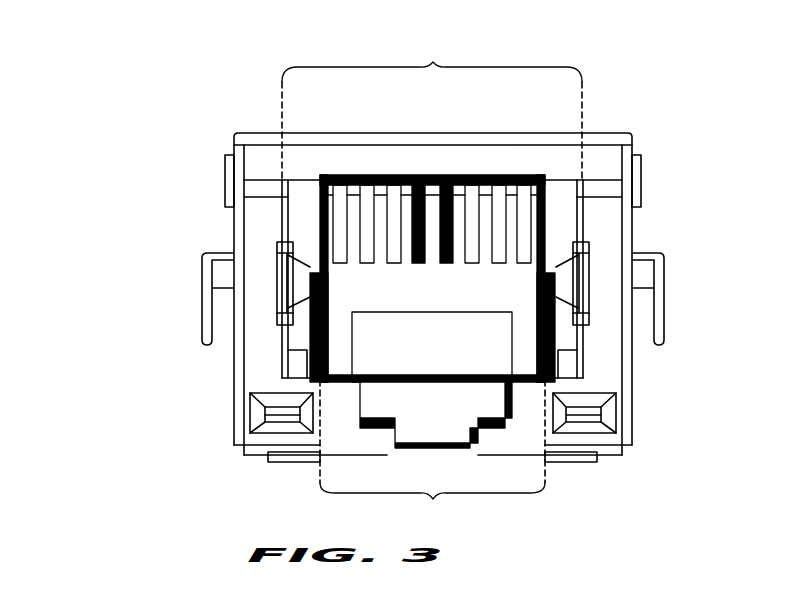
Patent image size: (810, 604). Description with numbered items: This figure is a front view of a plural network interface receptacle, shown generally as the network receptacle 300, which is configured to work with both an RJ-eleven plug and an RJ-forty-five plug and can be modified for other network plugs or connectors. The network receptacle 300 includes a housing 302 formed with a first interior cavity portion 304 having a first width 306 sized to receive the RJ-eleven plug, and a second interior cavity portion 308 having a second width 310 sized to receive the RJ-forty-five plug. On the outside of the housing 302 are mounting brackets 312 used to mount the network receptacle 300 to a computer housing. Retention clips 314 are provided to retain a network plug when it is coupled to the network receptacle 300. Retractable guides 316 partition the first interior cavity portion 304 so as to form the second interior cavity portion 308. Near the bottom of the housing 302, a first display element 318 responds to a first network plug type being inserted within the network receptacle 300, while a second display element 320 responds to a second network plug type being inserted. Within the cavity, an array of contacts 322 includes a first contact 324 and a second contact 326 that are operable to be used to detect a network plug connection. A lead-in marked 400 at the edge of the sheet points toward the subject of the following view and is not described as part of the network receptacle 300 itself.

The network receptacle 300 is at (114, 47).
The housing 302 is at (236, 133).
The first interior cavity portion 304 is at (318, 217).
The first width 306 is at (432, 449).
The second interior cavity portion 308 is at (282, 217).
The second width 310 is at (432, 151).
The mounting brackets 312 is at (203, 312).
The retention clips 314 is at (277, 246).
The retractable guides 316 is at (308, 345).
The first display element 318 is at (252, 433).
The second display element 320 is at (613, 433).
The array of contacts 322 is at (515, 283).
The first contact 324 is at (418, 178).
The second contact 326 is at (448, 178).
The connector assembly of FIG. 4 400 is at (110, 603).